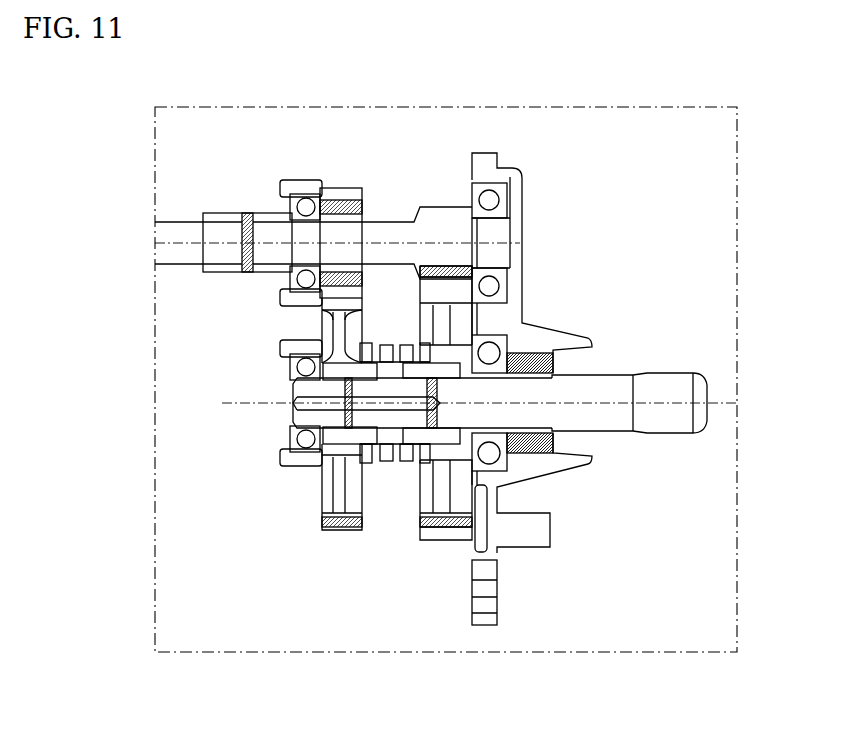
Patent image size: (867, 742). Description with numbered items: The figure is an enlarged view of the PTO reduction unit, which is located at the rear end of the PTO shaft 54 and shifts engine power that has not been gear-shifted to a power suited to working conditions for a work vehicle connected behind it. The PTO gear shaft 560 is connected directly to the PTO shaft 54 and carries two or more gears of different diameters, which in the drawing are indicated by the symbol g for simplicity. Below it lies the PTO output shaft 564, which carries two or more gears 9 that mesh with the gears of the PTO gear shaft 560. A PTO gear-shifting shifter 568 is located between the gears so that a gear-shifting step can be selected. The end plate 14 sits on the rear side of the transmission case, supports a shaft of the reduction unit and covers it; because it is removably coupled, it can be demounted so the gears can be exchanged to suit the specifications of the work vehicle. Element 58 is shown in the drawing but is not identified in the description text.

The gear 9 is at (338, 188).
The end plate 14 is at (510, 176).
The PTO shaft 54 is at (173, 253).
The bearing 58 is at (296, 154).
The PTO gear shaft 560 is at (392, 222).
The PTO output shaft 564 is at (672, 416).
The PTO gear-shifting shifter 568 is at (398, 465).